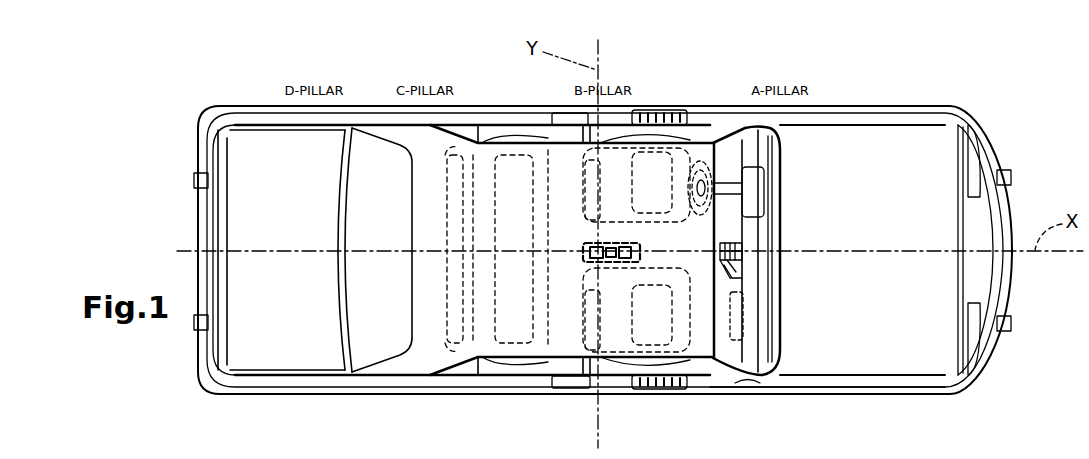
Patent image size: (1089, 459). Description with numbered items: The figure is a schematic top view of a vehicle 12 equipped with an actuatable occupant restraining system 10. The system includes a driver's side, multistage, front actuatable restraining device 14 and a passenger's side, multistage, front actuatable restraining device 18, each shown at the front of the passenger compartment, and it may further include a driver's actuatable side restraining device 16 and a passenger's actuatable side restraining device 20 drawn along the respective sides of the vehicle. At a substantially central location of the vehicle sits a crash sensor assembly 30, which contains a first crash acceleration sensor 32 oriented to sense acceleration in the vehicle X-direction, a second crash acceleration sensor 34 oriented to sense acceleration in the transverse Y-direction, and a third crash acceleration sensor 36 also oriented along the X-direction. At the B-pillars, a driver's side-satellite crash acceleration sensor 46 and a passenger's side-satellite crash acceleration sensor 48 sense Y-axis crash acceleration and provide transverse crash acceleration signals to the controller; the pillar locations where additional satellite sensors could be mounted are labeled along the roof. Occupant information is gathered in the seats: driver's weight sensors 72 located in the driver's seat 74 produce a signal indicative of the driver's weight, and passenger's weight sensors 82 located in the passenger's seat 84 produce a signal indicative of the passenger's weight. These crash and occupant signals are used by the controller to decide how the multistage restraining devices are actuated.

The actuatable occupant restraining system 10 is at (994, 92).
The vehicle 12 is at (797, 380).
The driver's side multistage front actuatable restraining device 14 is at (693, 177).
The driver's actuatable side restraining device 16 is at (650, 110).
The passenger's side multistage front actuatable restraining device 18 is at (728, 342).
The passenger's actuatable side restraining device 20 is at (648, 389).
The crash sensor assembly 30 is at (583, 263).
The first crash acceleration sensor 32 is at (592, 243).
The second crash acceleration sensor 34 is at (610, 245).
The third crash acceleration sensor 36 is at (626, 245).
The driver's side-satellite crash acceleration sensor 46 is at (570, 114).
The passenger's side-satellite crash acceleration sensor 48 is at (567, 387).
The driver's weight sensors 72 is at (655, 163).
The driver's seat 74 is at (714, 234).
The passenger's weight sensors 82 is at (653, 317).
The passenger's seat 84 is at (686, 278).